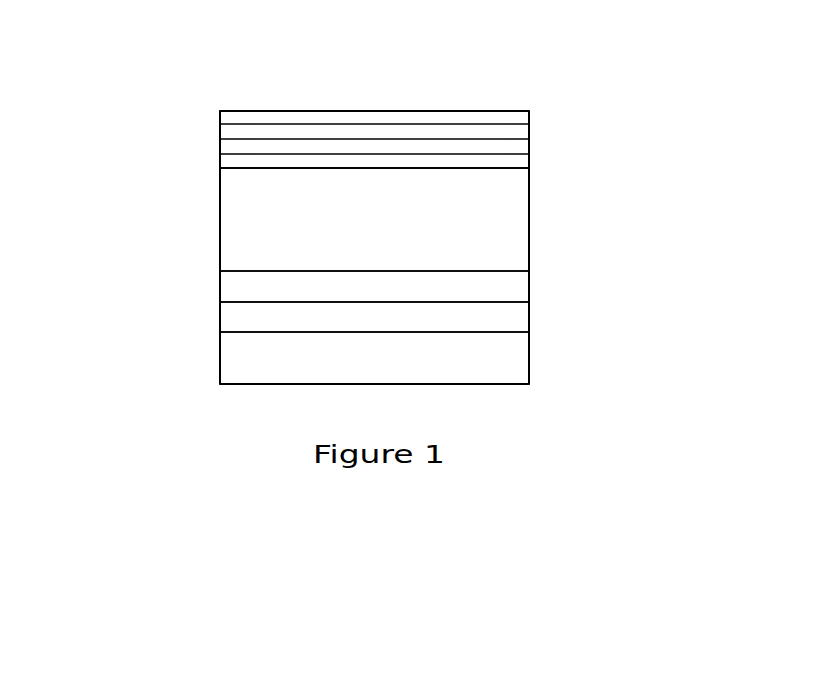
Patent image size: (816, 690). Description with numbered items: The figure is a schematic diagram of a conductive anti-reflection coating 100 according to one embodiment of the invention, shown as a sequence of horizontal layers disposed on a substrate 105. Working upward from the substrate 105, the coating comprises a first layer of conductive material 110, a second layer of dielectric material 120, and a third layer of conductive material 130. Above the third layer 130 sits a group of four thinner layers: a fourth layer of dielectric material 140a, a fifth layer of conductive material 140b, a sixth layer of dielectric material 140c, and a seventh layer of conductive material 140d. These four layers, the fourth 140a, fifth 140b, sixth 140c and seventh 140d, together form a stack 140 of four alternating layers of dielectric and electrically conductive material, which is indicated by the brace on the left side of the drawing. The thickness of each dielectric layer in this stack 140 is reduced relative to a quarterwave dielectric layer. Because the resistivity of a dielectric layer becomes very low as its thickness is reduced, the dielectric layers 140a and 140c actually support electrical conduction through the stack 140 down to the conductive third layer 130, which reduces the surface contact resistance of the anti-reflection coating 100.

The anti-reflection coating 100 is at (177, 287).
The substrate 105 is at (512, 365).
The first layer 110 is at (507, 318).
The second layer 120 is at (517, 283).
The third layer 130 is at (517, 219).
The stack 140 is at (207, 111).
The fourth layer 140a is at (517, 163).
The fifth layer 140b is at (248, 148).
The sixth layer 140c is at (522, 133).
The seventh layer 140d is at (365, 117).